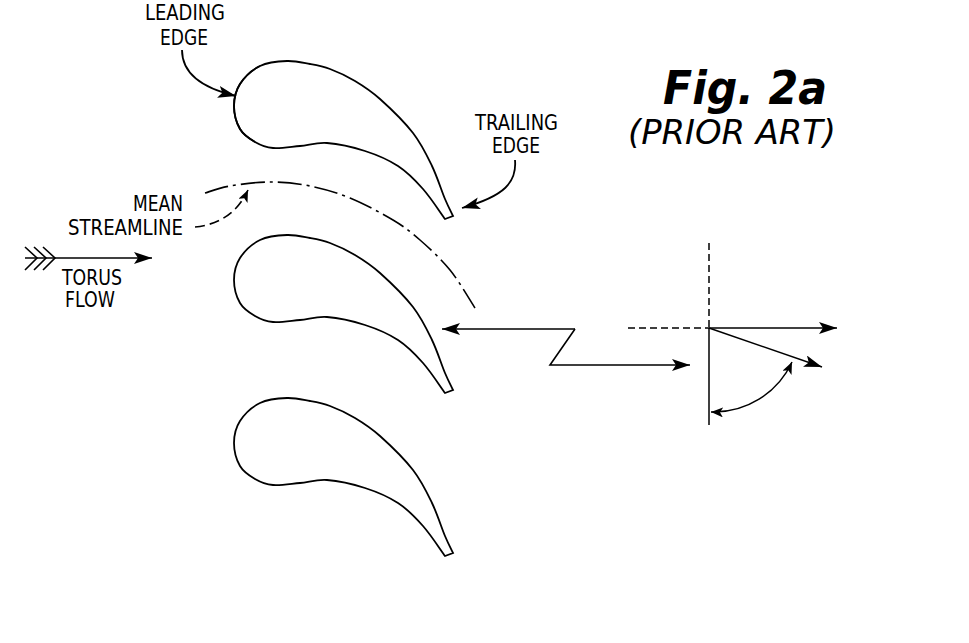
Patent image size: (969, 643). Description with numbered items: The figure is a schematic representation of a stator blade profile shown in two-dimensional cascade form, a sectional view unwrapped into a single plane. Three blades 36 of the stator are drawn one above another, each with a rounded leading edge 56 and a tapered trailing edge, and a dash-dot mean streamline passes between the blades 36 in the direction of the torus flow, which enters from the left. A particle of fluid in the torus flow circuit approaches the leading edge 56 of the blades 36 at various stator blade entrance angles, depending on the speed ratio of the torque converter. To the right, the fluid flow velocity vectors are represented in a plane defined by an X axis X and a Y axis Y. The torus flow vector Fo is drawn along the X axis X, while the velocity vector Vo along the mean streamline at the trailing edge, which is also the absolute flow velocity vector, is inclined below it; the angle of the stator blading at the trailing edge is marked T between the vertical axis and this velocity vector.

The blades 36 is at (353, 98).
The leading edge 56 is at (237, 110).
The X axis X is at (668, 316).
The Y axis Y is at (700, 332).
The torus flow vector Fo is at (773, 313).
The velocity vector along the mean streamline Vo is at (780, 351).
The angle of the stator blading at the trailing edge T is at (751, 391).